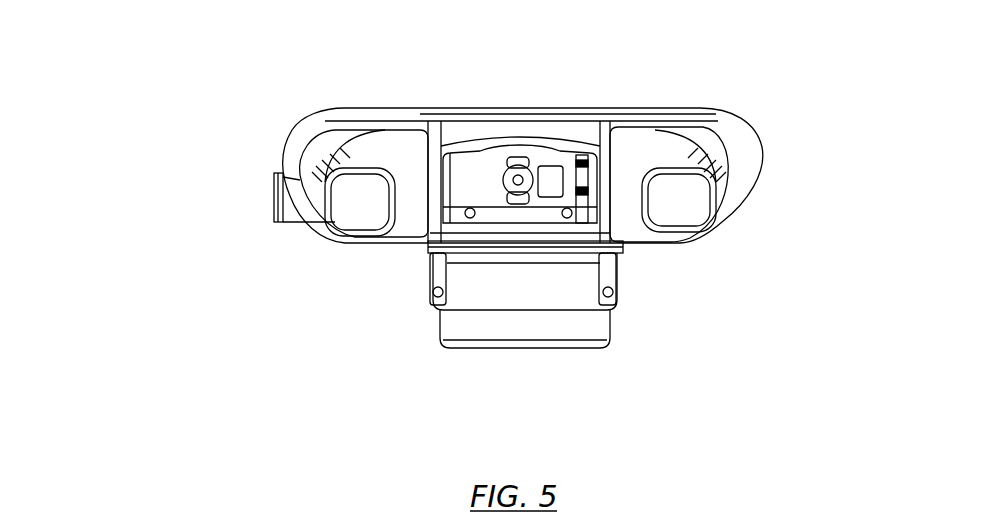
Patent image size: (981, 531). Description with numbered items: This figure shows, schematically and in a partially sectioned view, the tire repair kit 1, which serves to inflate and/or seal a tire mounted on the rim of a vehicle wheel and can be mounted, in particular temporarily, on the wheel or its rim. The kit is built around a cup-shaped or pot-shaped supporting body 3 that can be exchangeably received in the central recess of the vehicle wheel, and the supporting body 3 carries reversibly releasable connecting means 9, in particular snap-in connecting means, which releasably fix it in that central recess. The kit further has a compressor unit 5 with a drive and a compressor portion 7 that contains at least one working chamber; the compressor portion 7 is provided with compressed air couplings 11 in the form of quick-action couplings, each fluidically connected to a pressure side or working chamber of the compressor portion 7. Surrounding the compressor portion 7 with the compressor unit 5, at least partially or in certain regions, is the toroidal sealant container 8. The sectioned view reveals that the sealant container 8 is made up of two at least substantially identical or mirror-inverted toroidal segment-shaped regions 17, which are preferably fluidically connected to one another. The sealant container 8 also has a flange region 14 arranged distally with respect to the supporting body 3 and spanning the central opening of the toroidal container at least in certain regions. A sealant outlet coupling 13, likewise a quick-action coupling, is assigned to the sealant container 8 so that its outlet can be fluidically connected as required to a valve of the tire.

The tire repair kit 1 is at (530, 45).
The supporting body 3 is at (547, 320).
The compressor unit 5 is at (350, 147).
The compressor portion 7 is at (488, 192).
The sealant container 8 is at (353, 117).
The connecting means 9 is at (432, 288).
The compressed air coupling 11 is at (548, 180).
The sealant outlet coupling 13 is at (275, 195).
The flange region 14 is at (557, 107).
The toroidal segment-shaped region 17 is at (360, 212).